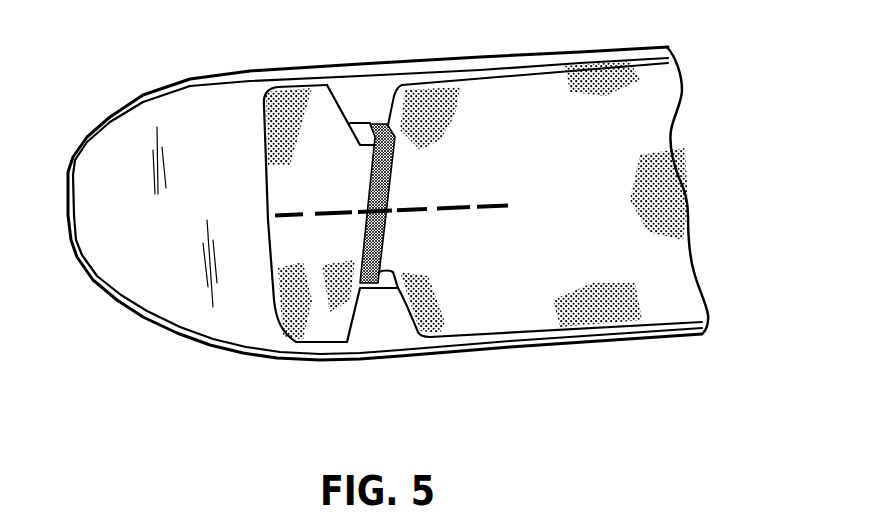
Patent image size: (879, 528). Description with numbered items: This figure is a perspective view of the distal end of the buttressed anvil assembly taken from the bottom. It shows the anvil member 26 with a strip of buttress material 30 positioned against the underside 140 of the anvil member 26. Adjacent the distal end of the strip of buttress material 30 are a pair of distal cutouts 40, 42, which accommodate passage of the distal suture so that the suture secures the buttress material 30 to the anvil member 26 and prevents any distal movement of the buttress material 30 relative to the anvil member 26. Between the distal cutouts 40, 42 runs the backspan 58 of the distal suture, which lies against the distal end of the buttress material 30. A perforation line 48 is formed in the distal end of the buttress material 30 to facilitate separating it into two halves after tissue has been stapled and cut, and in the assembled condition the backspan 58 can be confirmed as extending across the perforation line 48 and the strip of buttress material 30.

The anvil member 26 is at (188, 80).
The strip of buttress material 30 is at (667, 97).
The distal cutout 40 is at (355, 312).
The distal cutout 42 is at (343, 113).
The perforation line 48 is at (458, 208).
The backspan 58 is at (388, 193).
The underside 140 is at (218, 322).